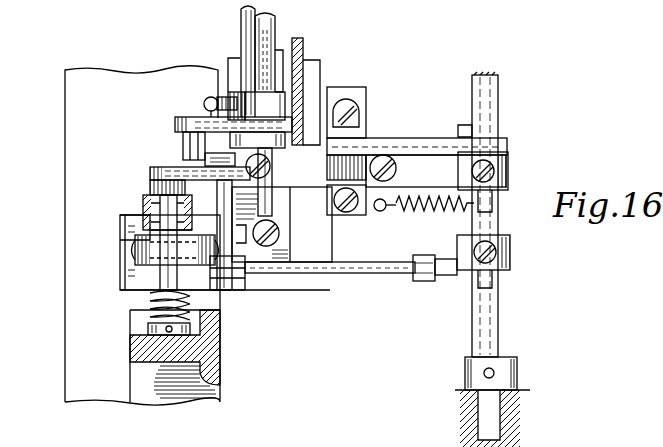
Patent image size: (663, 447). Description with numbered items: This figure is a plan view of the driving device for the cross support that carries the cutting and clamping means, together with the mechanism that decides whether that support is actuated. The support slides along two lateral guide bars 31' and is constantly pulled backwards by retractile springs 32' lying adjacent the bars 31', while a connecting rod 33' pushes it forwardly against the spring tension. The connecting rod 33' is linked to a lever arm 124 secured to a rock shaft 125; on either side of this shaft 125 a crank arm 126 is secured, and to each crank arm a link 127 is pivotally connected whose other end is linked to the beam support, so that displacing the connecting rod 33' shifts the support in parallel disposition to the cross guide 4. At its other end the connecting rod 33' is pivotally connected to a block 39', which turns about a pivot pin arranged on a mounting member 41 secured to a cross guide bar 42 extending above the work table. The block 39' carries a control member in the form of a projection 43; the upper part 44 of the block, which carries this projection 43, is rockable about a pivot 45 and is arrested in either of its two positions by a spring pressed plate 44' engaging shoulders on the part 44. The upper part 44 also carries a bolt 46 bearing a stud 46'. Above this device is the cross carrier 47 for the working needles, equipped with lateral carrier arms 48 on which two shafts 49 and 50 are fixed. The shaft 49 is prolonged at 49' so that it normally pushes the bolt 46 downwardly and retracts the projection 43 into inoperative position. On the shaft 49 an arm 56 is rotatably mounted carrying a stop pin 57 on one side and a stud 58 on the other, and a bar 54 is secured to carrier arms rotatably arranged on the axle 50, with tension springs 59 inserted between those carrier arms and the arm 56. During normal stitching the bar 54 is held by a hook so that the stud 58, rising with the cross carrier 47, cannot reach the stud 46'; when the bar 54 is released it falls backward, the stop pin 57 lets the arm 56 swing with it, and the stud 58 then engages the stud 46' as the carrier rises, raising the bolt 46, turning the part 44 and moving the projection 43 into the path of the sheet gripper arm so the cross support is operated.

The cross guide 4 is at (288, 190).
The lateral guide bars 31' is at (436, 145).
The retractile springs 32' is at (424, 215).
The connecting rod 33' is at (351, 280).
The block 39' is at (151, 251).
The mounting member 41 is at (138, 218).
The cross guide bar 42 is at (68, 167).
The projection 43 is at (148, 212).
The upper part of block 44 is at (131, 216).
The spring pressed plate 44' is at (135, 300).
The pivot 45 is at (138, 250).
The bolt 46 is at (177, 171).
The stud 46' is at (182, 154).
The cross carrier 47 is at (306, 62).
The carrier arm 48 is at (252, 142).
The shaft 49 is at (300, 56).
The prolongation of shaft 49' is at (291, 191).
The shaft (axle) 50 is at (242, 18).
The bar 54 is at (277, 30).
The arm 56 is at (188, 118).
The stop pin 57 is at (232, 60).
The stud 58 is at (185, 140).
The tension springs 59 is at (229, 96).
The lever arm 124 is at (512, 252).
The rock shaft 125 is at (499, 105).
The crank arm 126 is at (510, 160).
The link 127 is at (400, 138).